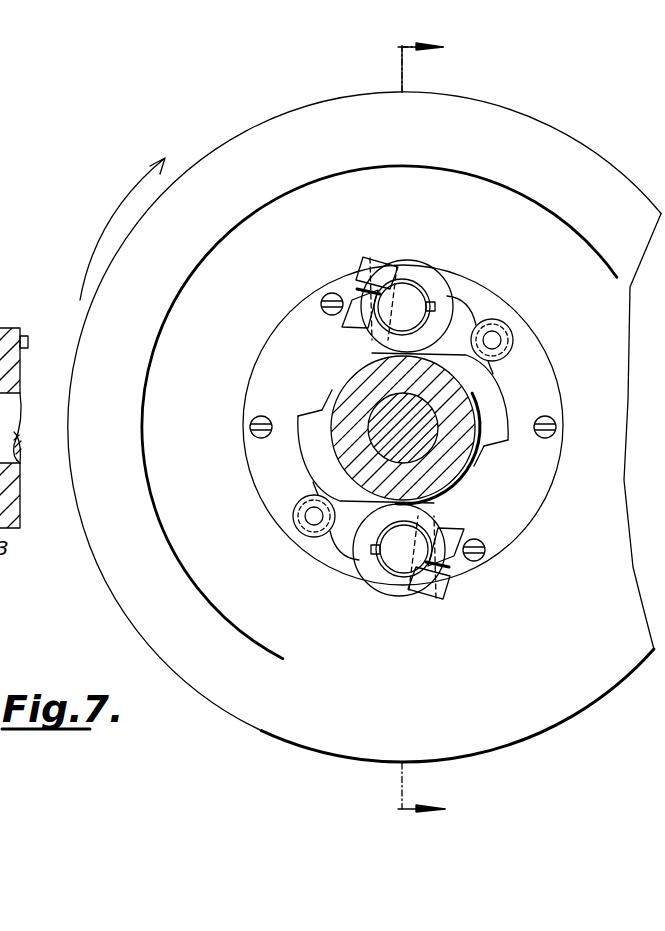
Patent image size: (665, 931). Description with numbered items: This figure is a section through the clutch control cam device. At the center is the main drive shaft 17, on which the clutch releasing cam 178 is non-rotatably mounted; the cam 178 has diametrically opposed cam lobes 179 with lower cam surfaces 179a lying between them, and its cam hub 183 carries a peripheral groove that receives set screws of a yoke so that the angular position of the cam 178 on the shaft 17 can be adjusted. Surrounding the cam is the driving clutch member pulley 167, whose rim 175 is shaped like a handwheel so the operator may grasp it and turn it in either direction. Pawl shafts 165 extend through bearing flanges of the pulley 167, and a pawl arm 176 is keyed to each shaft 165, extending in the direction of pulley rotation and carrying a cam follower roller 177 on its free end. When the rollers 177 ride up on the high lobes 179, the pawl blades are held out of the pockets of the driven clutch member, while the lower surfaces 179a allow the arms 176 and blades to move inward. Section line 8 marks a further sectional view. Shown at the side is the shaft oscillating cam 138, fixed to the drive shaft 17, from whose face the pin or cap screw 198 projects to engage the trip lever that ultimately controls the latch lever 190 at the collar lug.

The section line 8- 8 is at (409, 428).
The main drive shaft 17 is at (418, 440).
The cam 138 is at (20, 505).
The trunnion shaft 165 is at (408, 302).
The driving clutch member pulley 167 is at (312, 248).
The rim 175 is at (137, 605).
The pawl arm 176 is at (468, 290).
The cam follower roller 177 is at (510, 345).
The cam 178 is at (492, 410).
The cam lobes 179 is at (510, 437).
The lower cam surfaces 179a is at (527, 521).
The cam hub 183 is at (370, 373).
The latch lever 190 is at (50, 376).
The cap screw 198 is at (28, 347).